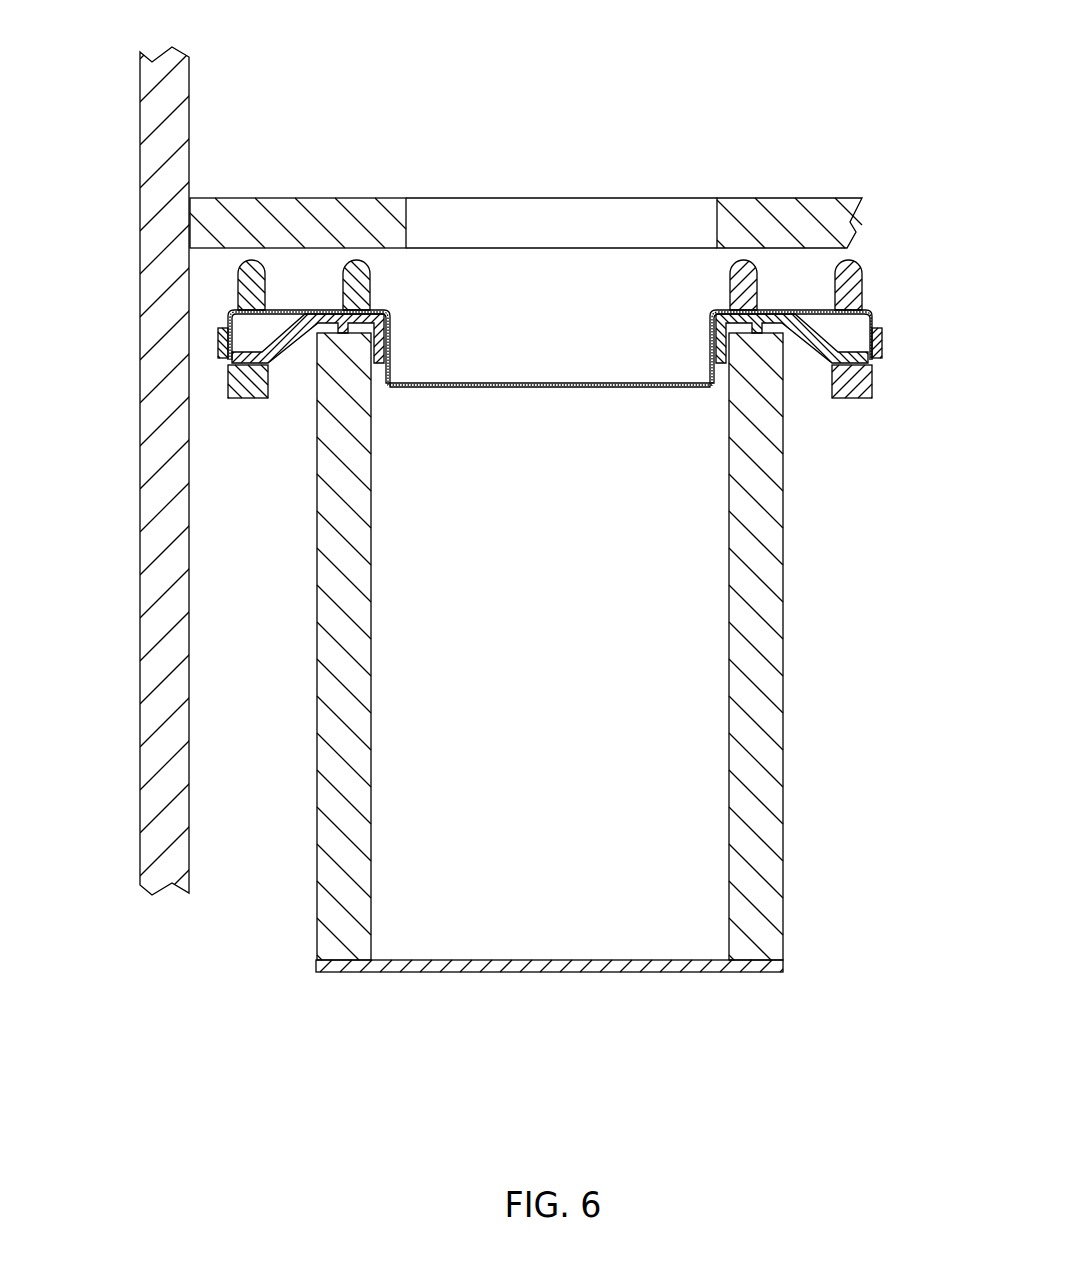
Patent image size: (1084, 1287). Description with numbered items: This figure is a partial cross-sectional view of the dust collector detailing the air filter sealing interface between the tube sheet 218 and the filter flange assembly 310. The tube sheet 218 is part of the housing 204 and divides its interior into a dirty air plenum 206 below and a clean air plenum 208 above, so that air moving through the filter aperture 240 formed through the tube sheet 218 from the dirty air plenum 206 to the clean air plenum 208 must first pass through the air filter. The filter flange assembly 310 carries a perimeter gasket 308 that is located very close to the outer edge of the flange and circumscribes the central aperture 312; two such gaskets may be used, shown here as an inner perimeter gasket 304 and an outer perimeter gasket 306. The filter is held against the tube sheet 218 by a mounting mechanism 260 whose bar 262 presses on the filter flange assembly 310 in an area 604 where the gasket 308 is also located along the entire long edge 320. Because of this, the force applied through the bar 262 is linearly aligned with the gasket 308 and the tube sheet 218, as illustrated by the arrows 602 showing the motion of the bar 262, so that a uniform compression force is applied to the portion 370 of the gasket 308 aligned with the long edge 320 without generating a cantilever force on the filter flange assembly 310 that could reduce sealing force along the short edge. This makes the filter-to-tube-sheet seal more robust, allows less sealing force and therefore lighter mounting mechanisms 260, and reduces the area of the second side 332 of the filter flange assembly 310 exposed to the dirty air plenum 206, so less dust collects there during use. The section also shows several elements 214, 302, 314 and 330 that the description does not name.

The housing 204 is at (120, 329).
The dirty air plenum 206 is at (548, 1041).
The clean air plenum 208 is at (536, 41).
The door panel 214 is at (178, 83).
The tube sheet 218 is at (215, 199).
The filter aperture 240 is at (546, 210).
The mounting mechanism 260 is at (276, 381).
The bar 262 is at (228, 380).
The container side wall 302 is at (770, 785).
The inner perimeter gasket 304 is at (782, 963).
The outer perimeter gasket 306 is at (396, 218).
The perimeter gasket 308 is at (264, 251).
The filter flange assembly 310 is at (899, 359).
The central aperture 312 is at (618, 390).
The container interior 314 is at (548, 584).
The long edge 320 is at (222, 328).
The tray corner 330 is at (395, 388).
The second side 332 is at (867, 343).
The portion of the gasket 370 is at (226, 277).
The arrows 602 is at (247, 401).
The area 604 is at (307, 298).